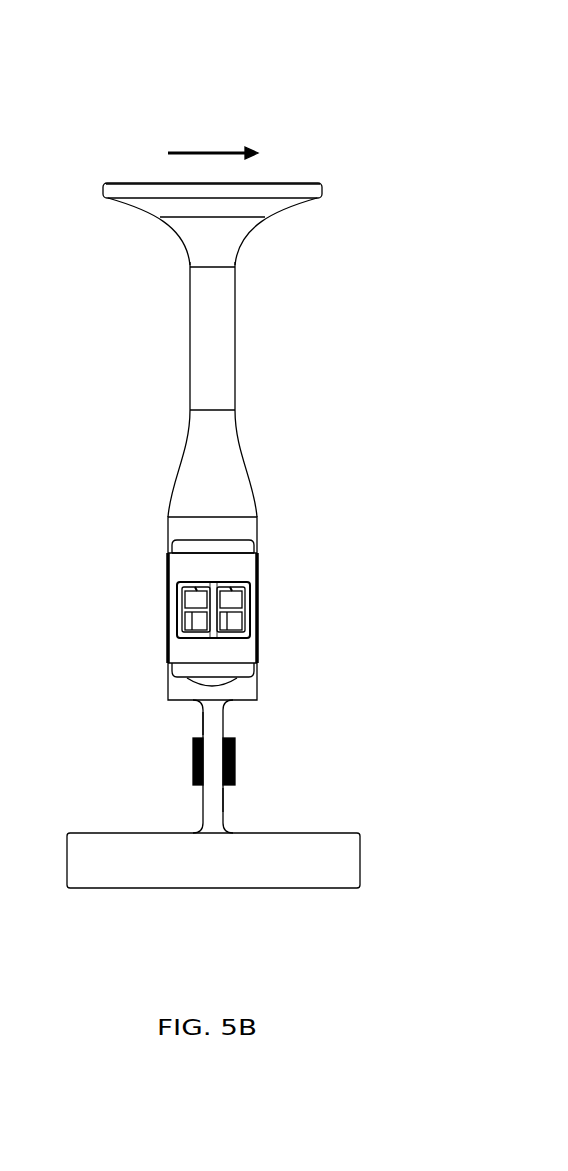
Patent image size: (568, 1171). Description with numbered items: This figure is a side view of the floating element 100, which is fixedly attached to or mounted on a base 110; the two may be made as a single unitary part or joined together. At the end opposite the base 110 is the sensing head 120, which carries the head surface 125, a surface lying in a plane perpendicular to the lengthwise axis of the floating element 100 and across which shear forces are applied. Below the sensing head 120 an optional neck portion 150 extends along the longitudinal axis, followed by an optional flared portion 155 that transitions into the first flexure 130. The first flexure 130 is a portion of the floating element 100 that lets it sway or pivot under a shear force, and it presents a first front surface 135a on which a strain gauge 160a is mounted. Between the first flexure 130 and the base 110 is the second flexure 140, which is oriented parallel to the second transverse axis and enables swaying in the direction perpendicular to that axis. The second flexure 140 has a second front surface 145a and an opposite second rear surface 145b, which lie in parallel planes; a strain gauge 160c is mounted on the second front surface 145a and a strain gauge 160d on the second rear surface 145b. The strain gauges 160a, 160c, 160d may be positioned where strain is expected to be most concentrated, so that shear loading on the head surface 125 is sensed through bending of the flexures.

The floating element 100 is at (287, 142).
The base 110 is at (318, 833).
The sensing head 120 is at (103, 191).
The head surface 125 is at (168, 183).
The first flexure 130 is at (170, 665).
The first front surface 135a is at (194, 568).
The second flexure 140 is at (212, 808).
The second front surface 145a is at (203, 727).
The second rear surface 145b is at (223, 800).
The neck portion 150 is at (190, 324).
The flared portion 155 is at (181, 470).
The strain gauge 160a is at (178, 612).
The strain gauge 160c is at (193, 763).
The strain gauge 160d is at (235, 762).